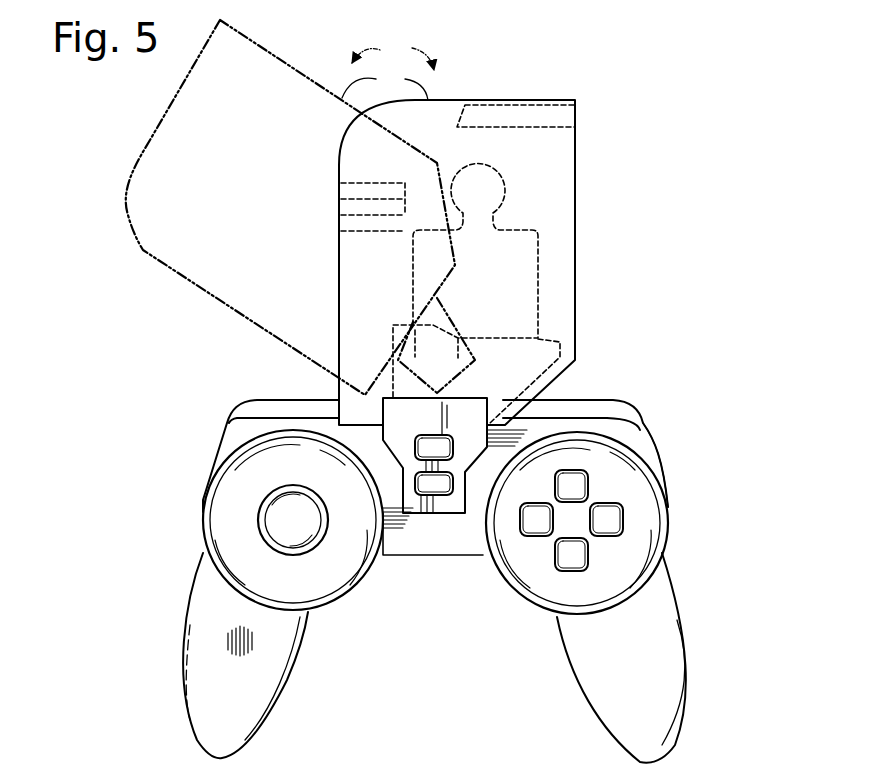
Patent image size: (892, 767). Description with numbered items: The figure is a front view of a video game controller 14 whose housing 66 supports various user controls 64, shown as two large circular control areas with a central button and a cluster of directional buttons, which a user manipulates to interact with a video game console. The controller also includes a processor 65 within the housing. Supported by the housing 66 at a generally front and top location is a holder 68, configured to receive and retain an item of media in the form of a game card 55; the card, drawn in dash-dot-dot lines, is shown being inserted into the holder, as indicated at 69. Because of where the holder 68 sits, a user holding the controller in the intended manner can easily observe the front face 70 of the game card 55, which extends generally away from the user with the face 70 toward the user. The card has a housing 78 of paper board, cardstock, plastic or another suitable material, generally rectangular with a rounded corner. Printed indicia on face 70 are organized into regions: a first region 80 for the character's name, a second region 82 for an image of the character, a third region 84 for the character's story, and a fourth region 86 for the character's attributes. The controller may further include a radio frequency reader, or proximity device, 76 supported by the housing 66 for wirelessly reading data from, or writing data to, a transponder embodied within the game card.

The video game controller 14 is at (546, 262).
The game card 55 is at (393, 55).
The user controls 64 is at (704, 397).
The processor 65 is at (420, 535).
The housing 66 is at (664, 462).
The holder 68 is at (474, 398).
The game card insertion 69 is at (220, 343).
The front face 70 is at (551, 194).
The radio frequency reader 76 is at (480, 492).
The card housing 78 is at (385, 82).
The first region 80 is at (531, 120).
The second region 82 is at (523, 257).
The third region 84 is at (530, 355).
The fourth region 86 is at (357, 197).